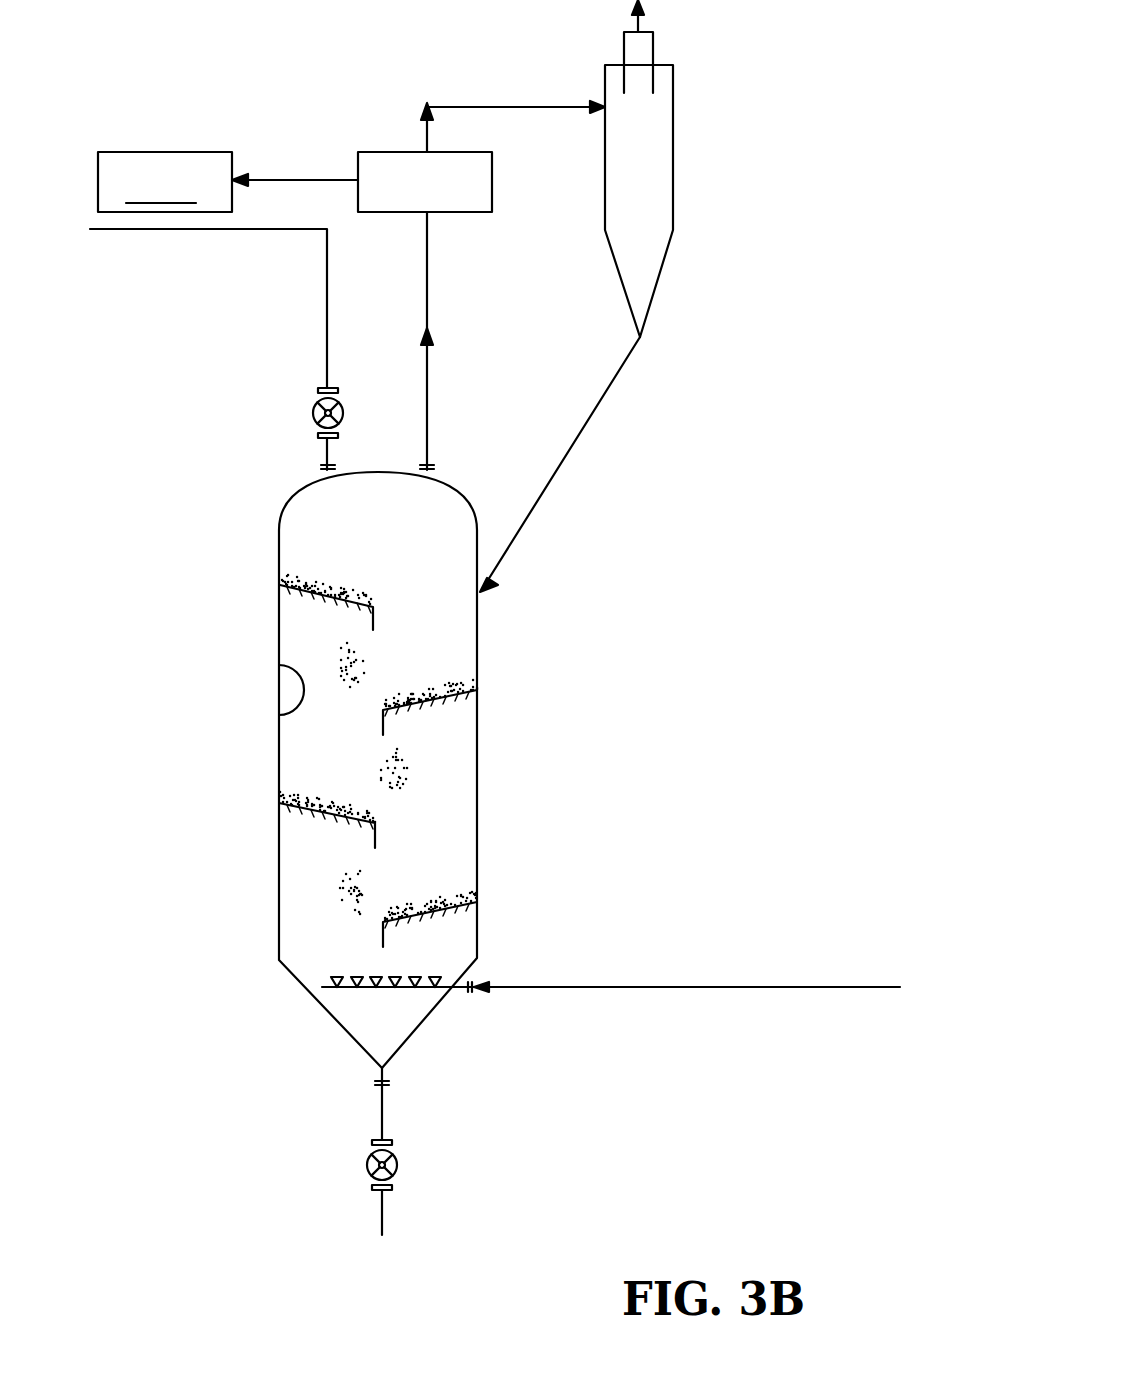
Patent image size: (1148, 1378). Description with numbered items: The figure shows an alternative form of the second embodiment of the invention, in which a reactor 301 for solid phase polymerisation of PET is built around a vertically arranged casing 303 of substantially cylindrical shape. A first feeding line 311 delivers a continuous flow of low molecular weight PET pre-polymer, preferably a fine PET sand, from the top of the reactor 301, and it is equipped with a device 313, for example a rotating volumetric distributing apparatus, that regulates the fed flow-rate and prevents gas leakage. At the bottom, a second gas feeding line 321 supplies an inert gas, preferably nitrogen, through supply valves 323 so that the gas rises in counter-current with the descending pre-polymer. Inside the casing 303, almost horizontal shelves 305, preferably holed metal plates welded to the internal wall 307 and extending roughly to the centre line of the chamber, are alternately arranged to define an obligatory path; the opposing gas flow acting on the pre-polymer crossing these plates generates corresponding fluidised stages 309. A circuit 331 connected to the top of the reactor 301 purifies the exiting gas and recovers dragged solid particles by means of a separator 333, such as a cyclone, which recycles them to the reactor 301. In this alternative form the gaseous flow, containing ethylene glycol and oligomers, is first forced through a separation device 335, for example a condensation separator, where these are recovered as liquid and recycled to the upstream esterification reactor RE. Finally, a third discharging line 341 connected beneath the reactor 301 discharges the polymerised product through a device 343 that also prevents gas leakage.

The reactor 301 is at (513, 777).
The casing 303 is at (480, 853).
The shelves 305 is at (333, 817).
The internal wall 307 is at (283, 712).
The fluidised stages 309 is at (327, 580).
The first feeding line 311 is at (158, 230).
The device 313 is at (317, 402).
The second gas feeding line 321 is at (740, 990).
The supply valves 323 is at (383, 990).
The circuit 331 is at (645, 363).
The separator 333 is at (673, 147).
The separation device 335 is at (463, 212).
The third discharging line 341 is at (382, 1212).
The device 343 is at (397, 1155).